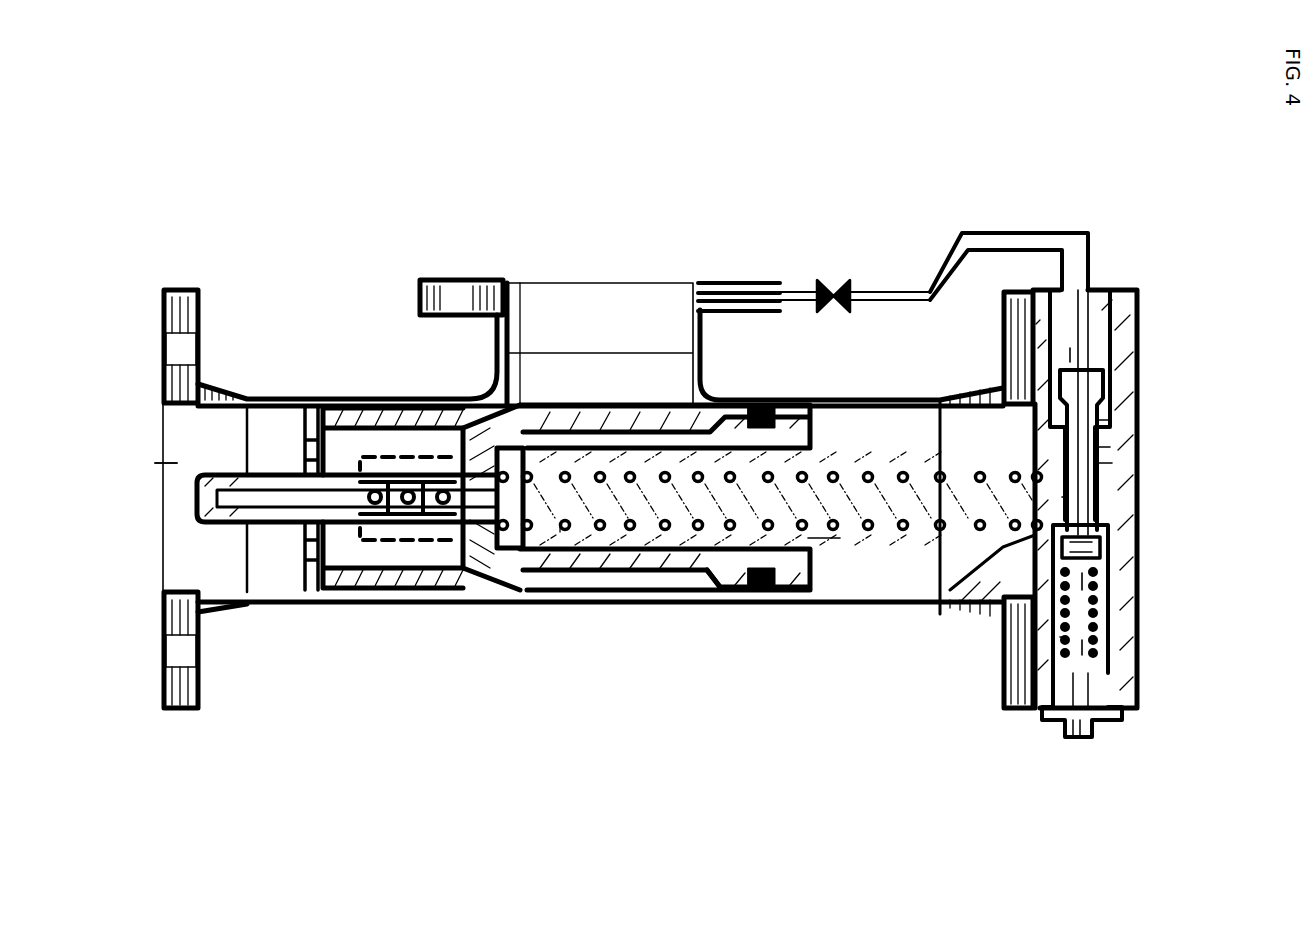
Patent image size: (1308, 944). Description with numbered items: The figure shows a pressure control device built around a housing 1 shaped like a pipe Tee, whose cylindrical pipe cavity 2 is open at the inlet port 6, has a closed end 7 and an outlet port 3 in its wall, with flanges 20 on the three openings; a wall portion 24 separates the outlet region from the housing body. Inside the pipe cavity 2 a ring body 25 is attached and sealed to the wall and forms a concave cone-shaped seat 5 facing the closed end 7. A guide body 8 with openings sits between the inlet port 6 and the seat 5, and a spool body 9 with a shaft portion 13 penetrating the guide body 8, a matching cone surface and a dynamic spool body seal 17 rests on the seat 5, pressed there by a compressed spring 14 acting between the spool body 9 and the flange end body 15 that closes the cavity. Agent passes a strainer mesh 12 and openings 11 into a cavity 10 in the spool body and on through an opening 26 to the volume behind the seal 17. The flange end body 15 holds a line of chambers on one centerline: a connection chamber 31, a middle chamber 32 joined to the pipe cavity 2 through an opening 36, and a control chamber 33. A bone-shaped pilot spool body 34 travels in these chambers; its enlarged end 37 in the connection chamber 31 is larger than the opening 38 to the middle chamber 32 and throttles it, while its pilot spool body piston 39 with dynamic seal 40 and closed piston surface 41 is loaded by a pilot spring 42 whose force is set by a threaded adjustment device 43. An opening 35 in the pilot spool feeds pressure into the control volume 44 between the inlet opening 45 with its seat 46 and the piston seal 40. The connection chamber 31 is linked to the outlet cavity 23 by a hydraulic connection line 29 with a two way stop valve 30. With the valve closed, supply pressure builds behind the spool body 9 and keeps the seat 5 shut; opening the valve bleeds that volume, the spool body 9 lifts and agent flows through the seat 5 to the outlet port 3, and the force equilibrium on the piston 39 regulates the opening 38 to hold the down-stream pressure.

The housing 1 is at (607, 607).
The pipe cavity 2 is at (653, 580).
The outlet port 3 is at (627, 405).
The seat 5 is at (478, 585).
The inlet port 6 is at (157, 455).
The closed end 7 is at (1017, 565).
The guide body 8 is at (303, 537).
The spool body 9 is at (720, 560).
The cavity 10 is at (683, 465).
The openings 11 is at (402, 517).
The strainer mesh 12 is at (428, 457).
The shaft portion 13 is at (282, 473).
The compressed spring 14 is at (560, 530).
The flange end body 15 is at (1122, 290).
The dynamic spool body seal 17 is at (773, 590).
The flanges 20 is at (166, 296).
The outlet cavity 23 is at (597, 301).
The partition 24 is at (523, 395).
The ring body 25 is at (383, 412).
The opening 26 is at (810, 540).
The hydraulic connection line 29 is at (887, 290).
The two way stop valve 30 is at (833, 280).
The connection chamber 31 is at (1080, 405).
The middle chamber 32 is at (1100, 466).
The control chamber 33 is at (1093, 627).
The pilot spool body 34 is at (1100, 447).
The opening 35 is at (1083, 363).
The opening 36 is at (1062, 497).
The enlarged end 37 is at (1070, 348).
The opening 38 is at (1100, 420).
The pilot spool body piston 39 is at (1100, 548).
The dynamic seal 40 is at (1108, 553).
The closed piston surface 41 is at (1063, 600).
The pilot spring 42 is at (1060, 637).
The adjustment device 43 is at (1093, 640).
The control volume 44 is at (1100, 528).
The inlet opening 45 is at (990, 600).
The seat 46 is at (1035, 535).